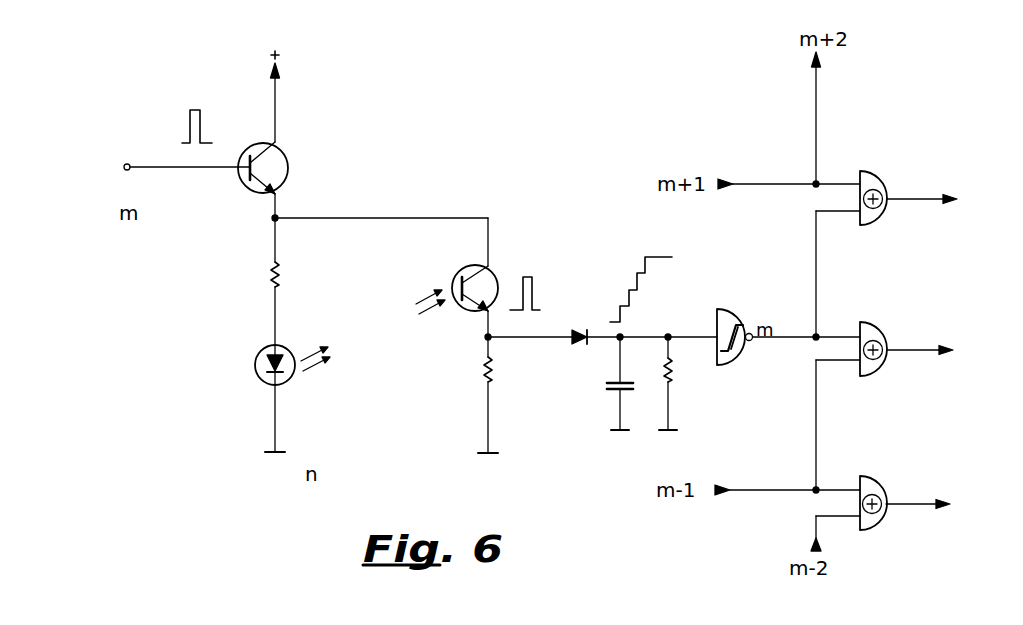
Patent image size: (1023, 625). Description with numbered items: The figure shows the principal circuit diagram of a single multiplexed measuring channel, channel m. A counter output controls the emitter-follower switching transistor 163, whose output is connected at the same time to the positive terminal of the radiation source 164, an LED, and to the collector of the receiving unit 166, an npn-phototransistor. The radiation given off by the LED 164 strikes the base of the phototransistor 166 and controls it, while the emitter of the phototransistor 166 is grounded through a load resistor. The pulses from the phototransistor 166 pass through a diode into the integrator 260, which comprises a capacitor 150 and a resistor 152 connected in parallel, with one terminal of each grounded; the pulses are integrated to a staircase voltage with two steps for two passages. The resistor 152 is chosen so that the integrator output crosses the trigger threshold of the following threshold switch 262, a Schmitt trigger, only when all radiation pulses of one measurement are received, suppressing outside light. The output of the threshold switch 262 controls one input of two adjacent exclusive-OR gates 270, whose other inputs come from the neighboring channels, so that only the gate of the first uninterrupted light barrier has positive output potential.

The capacitor 150 is at (608, 394).
The resistor 152 is at (675, 380).
The emitter-follower switching transistor 163 is at (287, 163).
The radiation source 164 is at (290, 374).
The receiving unit 166 is at (492, 281).
The integrator 260 is at (631, 358).
The threshold switch 262 is at (729, 311).
The exclusive-OR gate 270 is at (876, 177).